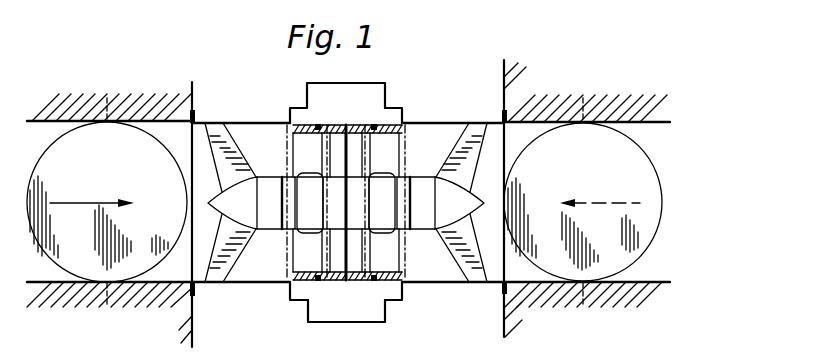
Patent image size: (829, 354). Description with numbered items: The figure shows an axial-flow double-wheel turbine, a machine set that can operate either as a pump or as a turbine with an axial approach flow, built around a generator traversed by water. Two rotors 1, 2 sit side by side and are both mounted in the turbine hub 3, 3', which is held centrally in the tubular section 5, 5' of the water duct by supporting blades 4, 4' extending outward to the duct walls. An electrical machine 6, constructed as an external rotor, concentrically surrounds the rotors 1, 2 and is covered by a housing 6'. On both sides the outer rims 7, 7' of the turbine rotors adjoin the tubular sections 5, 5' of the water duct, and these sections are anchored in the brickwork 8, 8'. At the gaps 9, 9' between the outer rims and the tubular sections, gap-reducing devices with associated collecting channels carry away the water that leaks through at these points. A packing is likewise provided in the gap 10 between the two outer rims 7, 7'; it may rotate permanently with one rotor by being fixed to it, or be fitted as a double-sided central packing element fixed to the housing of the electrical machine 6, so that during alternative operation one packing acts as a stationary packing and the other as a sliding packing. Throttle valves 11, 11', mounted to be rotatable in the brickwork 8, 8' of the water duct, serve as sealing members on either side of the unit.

The rotor 1 is at (314, 203).
The rotor 2 is at (378, 203).
The turbine hub 3 is at (245, 203).
The turbine hub 3' is at (447, 203).
The supporting blade 4 is at (230, 202).
The supporting blade 4' is at (461, 202).
The tubular section of the water duct 5 is at (241, 215).
The tubular section of the water duct 5' is at (453, 215).
The electrical machine 6 is at (337, 103).
The housing 6' is at (399, 99).
The outer rim 7 is at (317, 229).
The outer rim 7' is at (381, 229).
The brickwork 8 is at (111, 214).
The brickwork 8' is at (586, 198).
The gap 9 is at (290, 294).
The gap 9' is at (406, 294).
The gap 10 is at (321, 283).
The throttle valve 11 is at (107, 202).
The throttle valve 11' is at (583, 202).